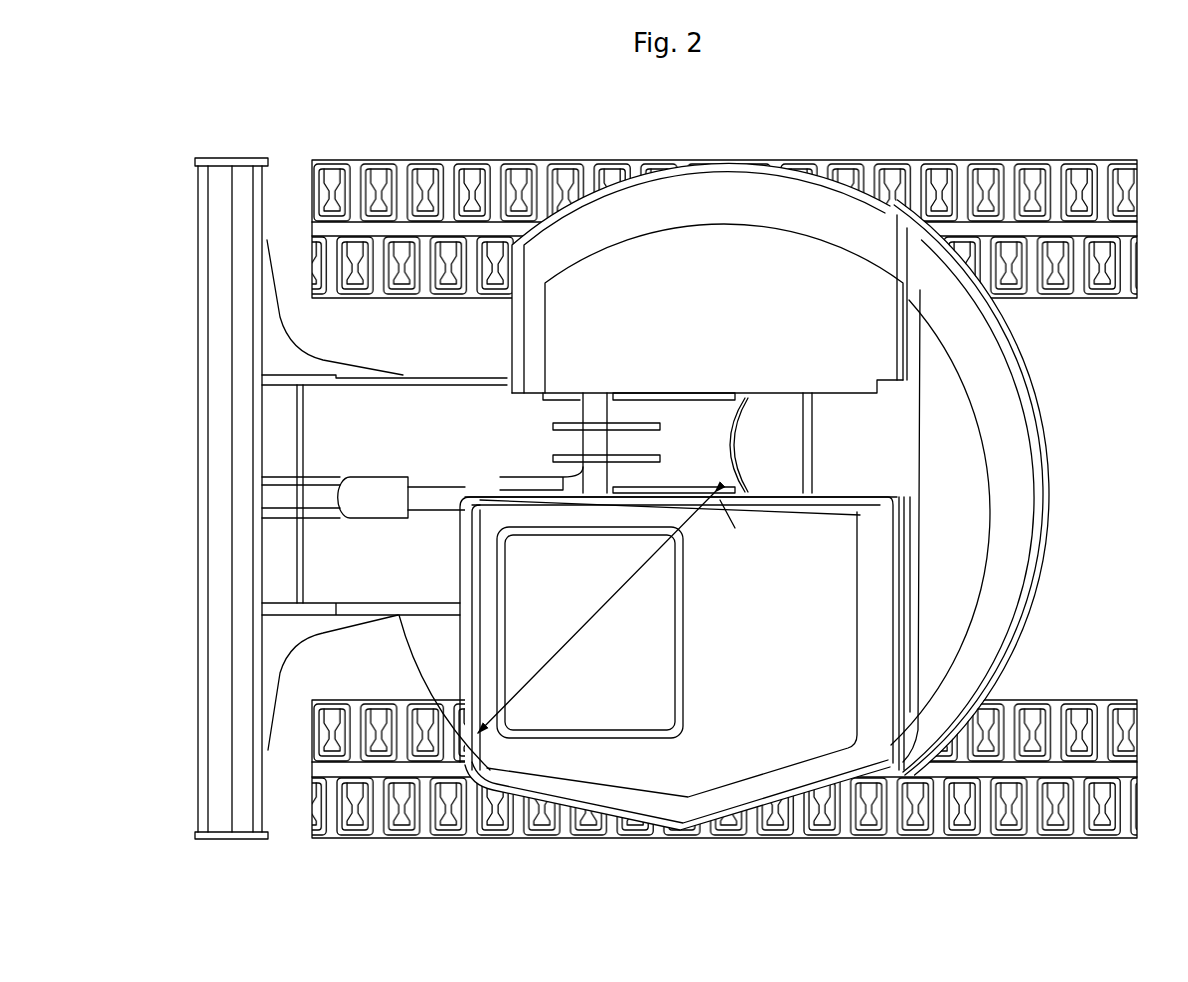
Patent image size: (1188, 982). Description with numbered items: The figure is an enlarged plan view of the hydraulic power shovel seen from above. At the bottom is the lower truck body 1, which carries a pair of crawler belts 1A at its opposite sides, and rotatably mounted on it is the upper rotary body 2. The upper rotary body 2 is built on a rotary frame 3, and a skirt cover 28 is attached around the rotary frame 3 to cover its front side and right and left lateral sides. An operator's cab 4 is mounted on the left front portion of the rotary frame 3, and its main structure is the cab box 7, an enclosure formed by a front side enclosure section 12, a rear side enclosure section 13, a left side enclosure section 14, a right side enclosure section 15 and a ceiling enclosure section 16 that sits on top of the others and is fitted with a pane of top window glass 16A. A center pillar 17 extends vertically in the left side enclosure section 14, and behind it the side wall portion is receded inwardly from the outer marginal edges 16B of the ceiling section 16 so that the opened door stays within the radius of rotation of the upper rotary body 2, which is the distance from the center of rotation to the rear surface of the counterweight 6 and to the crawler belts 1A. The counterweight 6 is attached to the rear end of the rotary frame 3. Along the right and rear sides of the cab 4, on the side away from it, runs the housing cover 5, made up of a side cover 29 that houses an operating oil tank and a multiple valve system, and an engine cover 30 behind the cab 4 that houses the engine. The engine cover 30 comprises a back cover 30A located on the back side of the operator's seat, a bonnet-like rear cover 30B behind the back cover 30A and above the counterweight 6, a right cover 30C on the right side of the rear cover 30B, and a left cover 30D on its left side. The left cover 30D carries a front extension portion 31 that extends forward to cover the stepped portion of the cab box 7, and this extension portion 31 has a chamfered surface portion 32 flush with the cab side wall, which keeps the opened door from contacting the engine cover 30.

The lower truck body 1 is at (744, 501).
The crawler belt 1A is at (410, 183).
The upper rotary body 2 is at (784, 506).
The rotary frame 3 is at (580, 440).
The operator's cab 4 is at (912, 627).
The housing cover 5 is at (1047, 445).
The counterweight 6 is at (1052, 545).
The cab box 7 is at (912, 592).
The front side enclosure section 12 is at (654, 695).
The rear side enclosure section 13 is at (910, 665).
The left side enclosure section 14 is at (605, 822).
The right side enclosure section 15 is at (793, 480).
The ceiling enclosure section 16 is at (810, 748).
The top window glass 16A is at (648, 708).
The outer marginal edge 16B is at (770, 812).
The center pillar 17 is at (689, 830).
The skirt cover 28 is at (650, 178).
The side cover 29 is at (740, 212).
The engine cover 30 is at (1012, 560).
The back cover 30A is at (878, 428).
The rear cover 30B is at (1040, 522).
The right cover 30C is at (1002, 352).
The left cover 30D is at (930, 790).
The front extension portion 31 is at (905, 762).
The chamfered surface portion 32 is at (897, 773).